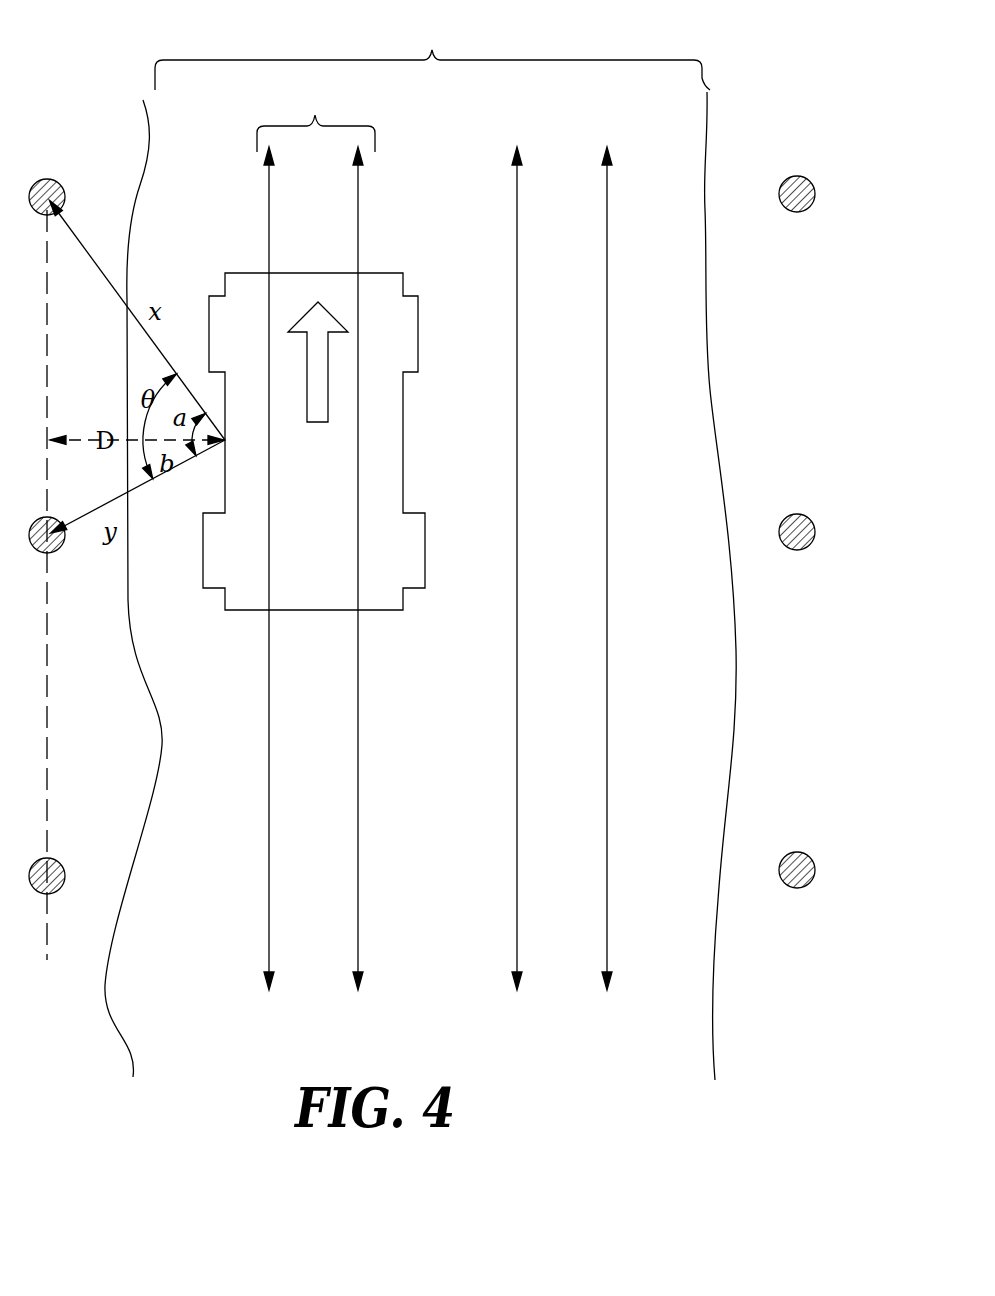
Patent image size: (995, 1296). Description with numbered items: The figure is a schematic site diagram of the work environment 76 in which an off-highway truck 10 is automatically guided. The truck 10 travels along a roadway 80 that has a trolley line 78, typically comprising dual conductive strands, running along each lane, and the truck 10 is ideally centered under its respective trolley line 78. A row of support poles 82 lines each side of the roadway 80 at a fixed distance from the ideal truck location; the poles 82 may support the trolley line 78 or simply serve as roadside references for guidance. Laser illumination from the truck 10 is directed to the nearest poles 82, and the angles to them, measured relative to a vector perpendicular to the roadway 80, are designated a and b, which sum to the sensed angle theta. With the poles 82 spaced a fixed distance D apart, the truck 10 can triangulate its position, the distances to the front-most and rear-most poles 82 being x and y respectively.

The off-highway truck 10 is at (400, 272).
The work environment 76 is at (420, 586).
The trolley line 78 is at (315, 98).
The roadway 80 is at (432, 51).
The support poles 82 is at (44, 180).